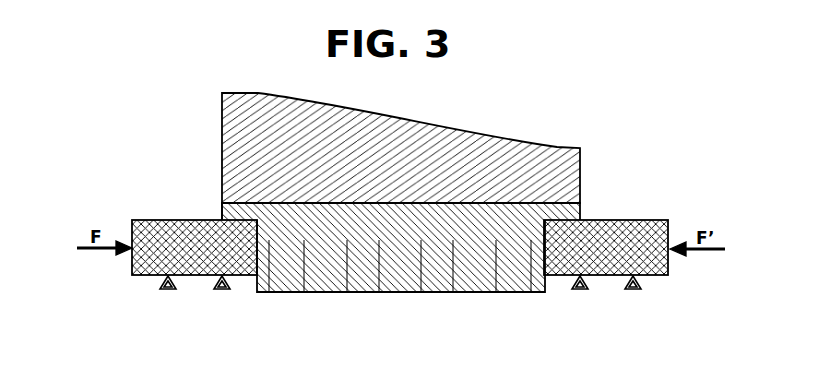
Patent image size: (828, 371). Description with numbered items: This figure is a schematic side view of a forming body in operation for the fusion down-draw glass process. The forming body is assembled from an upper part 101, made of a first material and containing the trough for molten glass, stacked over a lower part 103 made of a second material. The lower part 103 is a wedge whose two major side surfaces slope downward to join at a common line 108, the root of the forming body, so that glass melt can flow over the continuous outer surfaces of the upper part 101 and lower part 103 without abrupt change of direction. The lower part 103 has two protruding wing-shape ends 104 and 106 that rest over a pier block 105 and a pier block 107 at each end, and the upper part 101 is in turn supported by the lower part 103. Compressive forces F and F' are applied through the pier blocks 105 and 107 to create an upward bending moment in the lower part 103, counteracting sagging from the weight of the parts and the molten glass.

The upper part 101 is at (580, 162).
The lower part 103 is at (337, 282).
The protruding wing-shape end 104 is at (580, 217).
The pier block 105 is at (168, 220).
The protruding wing-shape end 106 is at (222, 213).
The pier block 107 is at (640, 220).
The common line (root) 108 is at (497, 292).